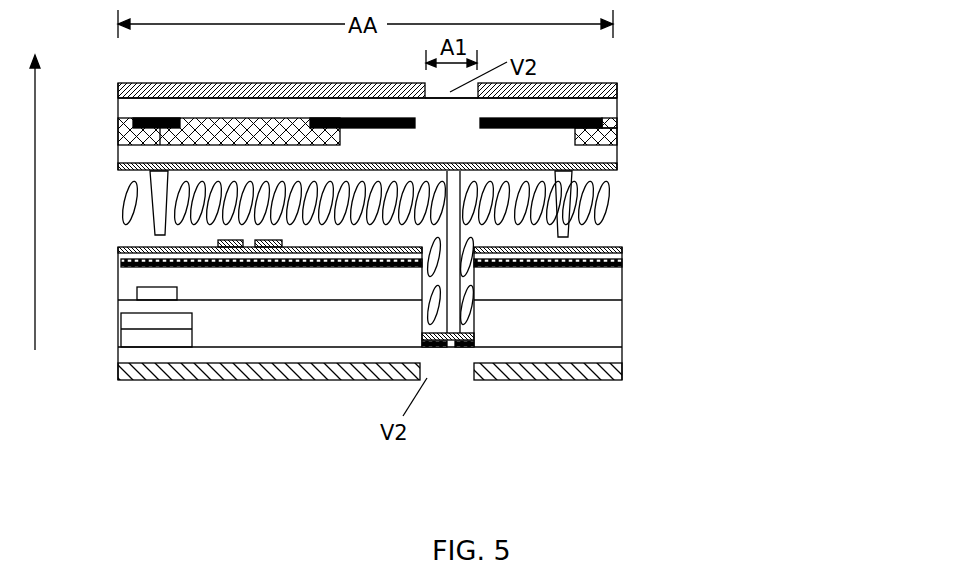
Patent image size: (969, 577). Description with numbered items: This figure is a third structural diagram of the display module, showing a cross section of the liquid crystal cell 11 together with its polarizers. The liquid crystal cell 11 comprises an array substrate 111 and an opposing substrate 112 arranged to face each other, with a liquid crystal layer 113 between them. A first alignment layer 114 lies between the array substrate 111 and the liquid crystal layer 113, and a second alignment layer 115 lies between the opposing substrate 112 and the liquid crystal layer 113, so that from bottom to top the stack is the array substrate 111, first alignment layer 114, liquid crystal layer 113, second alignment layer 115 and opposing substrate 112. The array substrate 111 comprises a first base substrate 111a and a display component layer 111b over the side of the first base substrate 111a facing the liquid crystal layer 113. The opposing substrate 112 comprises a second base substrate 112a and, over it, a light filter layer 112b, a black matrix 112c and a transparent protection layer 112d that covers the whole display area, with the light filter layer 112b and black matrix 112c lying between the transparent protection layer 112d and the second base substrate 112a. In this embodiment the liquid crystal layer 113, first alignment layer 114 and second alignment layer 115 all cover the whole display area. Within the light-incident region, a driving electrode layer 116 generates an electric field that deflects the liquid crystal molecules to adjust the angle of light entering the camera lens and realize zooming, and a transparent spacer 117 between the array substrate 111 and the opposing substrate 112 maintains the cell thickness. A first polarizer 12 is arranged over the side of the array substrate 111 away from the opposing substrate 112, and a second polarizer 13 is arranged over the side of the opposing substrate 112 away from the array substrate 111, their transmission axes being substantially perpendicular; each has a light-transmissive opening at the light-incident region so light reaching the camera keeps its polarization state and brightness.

The liquid crystal cell 11 is at (423, 254).
The first polarizer 12 is at (402, 337).
The second polarizer 13 is at (407, 124).
The array substrate 111 is at (438, 337).
The first base substrate 111a is at (622, 357).
The display component layer 111b is at (625, 262).
The opposing substrate 112 is at (437, 124).
The second base substrate 112a is at (617, 105).
The light filter layer 112b is at (617, 132).
The black matrix 112c is at (533, 128).
The transparent protection layer 112d is at (608, 152).
The liquid crystal layer 113 is at (610, 223).
The first alignment layer 114 is at (622, 248).
The second alignment layer 115 is at (617, 172).
The driving electrode layer 116 is at (428, 347).
The transparent spacer 117 is at (452, 318).